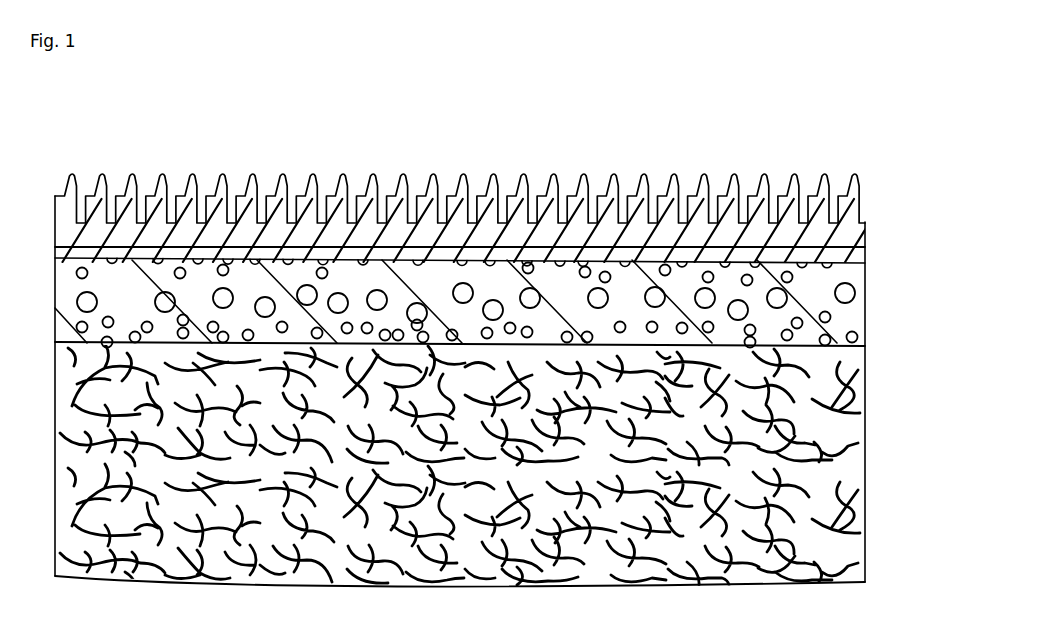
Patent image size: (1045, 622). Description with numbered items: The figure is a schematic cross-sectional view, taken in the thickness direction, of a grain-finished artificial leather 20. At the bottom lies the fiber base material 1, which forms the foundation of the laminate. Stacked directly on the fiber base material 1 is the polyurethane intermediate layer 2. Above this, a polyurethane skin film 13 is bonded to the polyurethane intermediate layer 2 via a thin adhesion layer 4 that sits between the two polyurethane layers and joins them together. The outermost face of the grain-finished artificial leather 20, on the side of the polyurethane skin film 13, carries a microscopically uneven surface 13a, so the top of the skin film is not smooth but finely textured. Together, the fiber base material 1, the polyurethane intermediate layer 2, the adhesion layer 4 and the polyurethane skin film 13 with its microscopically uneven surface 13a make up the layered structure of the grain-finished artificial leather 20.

The grain-finished artificial leather 20 is at (95, 118).
The polyurethane skin film 13 is at (864, 196).
The microscopically uneven surface 13a is at (472, 146).
The adhesion layer 4 is at (863, 262).
The polyurethane intermediate layer 2 is at (863, 304).
The fiber base material 1 is at (857, 447).